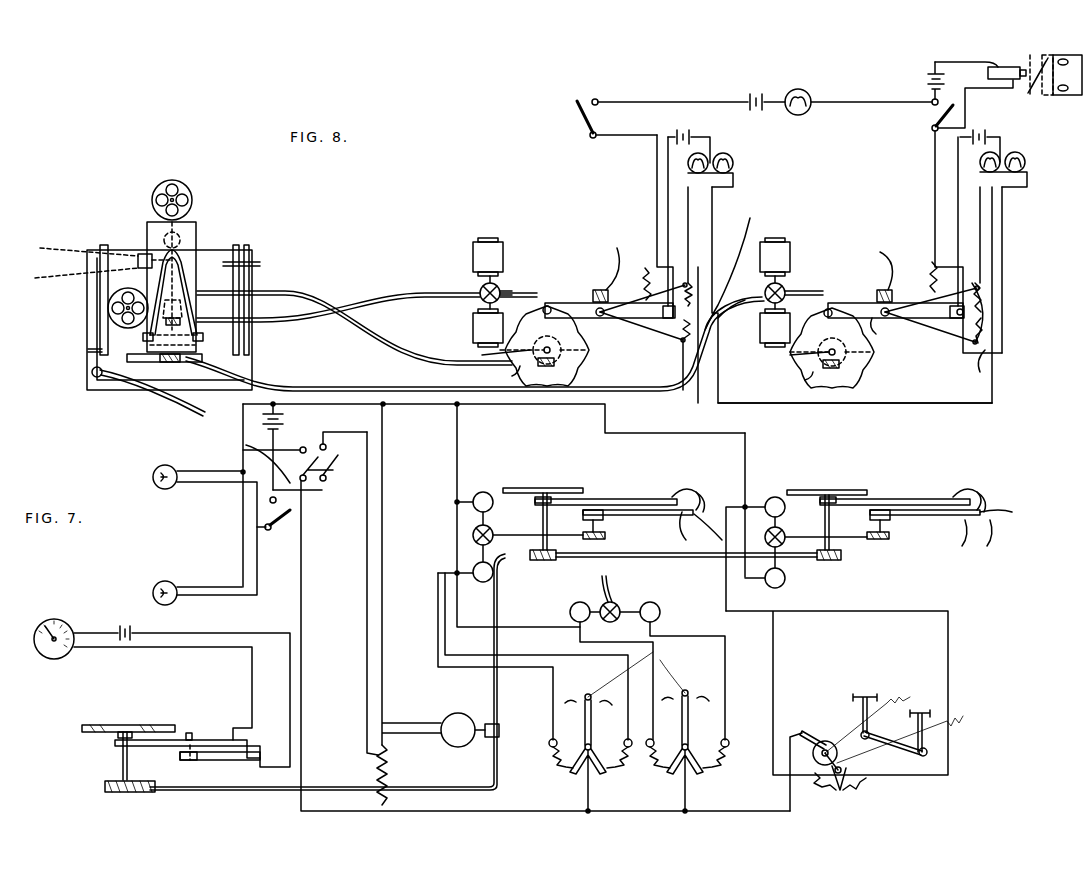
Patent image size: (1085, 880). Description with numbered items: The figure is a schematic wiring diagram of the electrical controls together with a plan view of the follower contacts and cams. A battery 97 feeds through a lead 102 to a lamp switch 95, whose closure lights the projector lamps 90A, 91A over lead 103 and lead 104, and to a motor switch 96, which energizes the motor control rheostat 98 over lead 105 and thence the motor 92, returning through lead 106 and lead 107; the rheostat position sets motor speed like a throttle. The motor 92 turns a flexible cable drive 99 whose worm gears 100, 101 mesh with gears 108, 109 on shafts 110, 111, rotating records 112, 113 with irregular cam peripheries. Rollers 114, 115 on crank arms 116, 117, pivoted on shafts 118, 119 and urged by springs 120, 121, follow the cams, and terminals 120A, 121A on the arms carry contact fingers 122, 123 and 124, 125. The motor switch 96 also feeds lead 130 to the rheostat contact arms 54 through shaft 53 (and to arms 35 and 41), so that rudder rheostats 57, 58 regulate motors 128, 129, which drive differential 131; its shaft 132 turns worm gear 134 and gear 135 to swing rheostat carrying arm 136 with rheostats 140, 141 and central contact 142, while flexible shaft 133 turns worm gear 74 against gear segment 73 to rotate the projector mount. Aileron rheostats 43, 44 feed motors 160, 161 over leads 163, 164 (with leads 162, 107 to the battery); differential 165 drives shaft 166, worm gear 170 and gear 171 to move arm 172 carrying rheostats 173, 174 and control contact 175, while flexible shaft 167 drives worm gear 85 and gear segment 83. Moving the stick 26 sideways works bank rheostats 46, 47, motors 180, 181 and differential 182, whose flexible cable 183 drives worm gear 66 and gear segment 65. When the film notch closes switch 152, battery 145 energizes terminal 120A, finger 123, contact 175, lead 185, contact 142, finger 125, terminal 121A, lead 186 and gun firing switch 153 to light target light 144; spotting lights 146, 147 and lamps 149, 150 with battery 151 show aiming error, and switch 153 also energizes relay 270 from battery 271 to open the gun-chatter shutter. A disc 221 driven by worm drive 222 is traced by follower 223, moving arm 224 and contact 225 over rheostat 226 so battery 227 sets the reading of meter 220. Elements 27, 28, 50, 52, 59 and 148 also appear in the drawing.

In FIG. 7, the stick 26 is at (636, 672).
In FIG. 7, the T-handle 27 is at (924, 710).
In FIG. 7, the T-handle 28 is at (864, 695).
In FIG. 7, the rheostat contact arms 35 is at (583, 762).
In FIG. 7, the rheostat contact arms 41 is at (687, 762).
In FIG. 7, the aileron control rheostat 43 is at (550, 751).
In FIG. 7, the aileron control rheostat 44 is at (609, 769).
In FIG. 7, the bank control rheostat 46 is at (658, 770).
In FIG. 7, the bank control rheostat 47 is at (720, 768).
In FIG. 7, the rod 50 is at (900, 741).
In FIG. 7, the disc 52 is at (831, 742).
In FIG. 7, the shaft 53 is at (808, 735).
In FIG. 7, the rheostat contact arms 54 is at (848, 770).
In FIG. 7, the rudder control rheostat 57 is at (826, 791).
In FIG. 7, the rudder control rheostat 58 is at (849, 791).
In FIG. 7, the link 59 is at (958, 714).
In FIG. 8, the gear segment 65 is at (88, 352).
In FIG. 8, the worm gear 66 is at (92, 373).
In FIG. 8, the gear segment 73 is at (153, 362).
In FIG. 8, the worm gear 74 is at (175, 362).
In FIG. 8, the gear segment 83 is at (182, 285).
In FIG. 8, the worm gear 85 is at (183, 310).
In FIG. 7, the projector lamp 90A is at (153, 476).
In FIG. 7, the projector lamp 91A is at (153, 592).
In FIG. 7, the motor 92 is at (454, 748).
In FIG. 7, the lamp switch 95 is at (292, 515).
In FIG. 7, the motor switch 96 is at (330, 457).
In FIG. 7, the battery 97 is at (282, 420).
In FIG. 7, the motor control rheostat 98 is at (377, 770).
In FIG. 8, the flexible cable drive 99 is at (290, 291).
In FIG. 7, the flexible cable drive 99 is at (494, 688).
In FIG. 8, the worm gear 100 is at (565, 372).
In FIG. 7, the worm gear 100 is at (545, 563).
In FIG. 8, the worm gear 101 is at (855, 372).
In FIG. 7, the worm gear 101 is at (822, 562).
In FIG. 7, the lead 102 is at (250, 446).
In FIG. 7, the lead 103 is at (248, 535).
In FIG. 7, the lead 104 is at (242, 505).
In FIG. 7, the lead 105 is at (367, 532).
In FIG. 7, the lead 106 is at (383, 560).
In FIG. 7, the lead 107 is at (457, 410).
In FIG. 8, the gear 108 is at (560, 359).
In FIG. 7, the gear 108 is at (558, 561).
In FIG. 8, the gear 109 is at (845, 360).
In FIG. 7, the gear 109 is at (842, 560).
In FIG. 8, the shaft 110 is at (491, 355).
In FIG. 7, the shaft 110 is at (543, 514).
In FIG. 8, the shaft 111 is at (795, 355).
In FIG. 7, the shaft 111 is at (825, 522).
In FIG. 8, the record 112 is at (512, 376).
In FIG. 7, the record 112 is at (527, 490).
In FIG. 8, the record 113 is at (805, 380).
In FIG. 7, the record 113 is at (817, 490).
In FIG. 8, the roller 114 is at (547, 306).
In FIG. 7, the roller 114 is at (545, 496).
In FIG. 8, the roller 115 is at (828, 307).
In FIG. 7, the roller 115 is at (828, 497).
In FIG. 8, the crank arm 116 is at (597, 290).
In FIG. 7, the crank arm 116 is at (636, 497).
In FIG. 8, the crank arm 117 is at (879, 290).
In FIG. 7, the crank arm 117 is at (906, 497).
In FIG. 8, the shaft 118 is at (604, 308).
In FIG. 7, the shaft 118 is at (594, 497).
In FIG. 8, the shaft 119 is at (889, 308).
In FIG. 7, the shaft 119 is at (874, 497).
In FIG. 8, the spring 120 is at (645, 268).
In FIG. 8, the terminal 120A is at (642, 334).
In FIG. 8, the spring 121 is at (932, 262).
In FIG. 8, the terminal 121A is at (931, 334).
In FIG. 7, the contact finger 122 is at (668, 496).
In FIG. 7, the contact finger 123 is at (713, 495).
In FIG. 7, the contact finger 124 is at (962, 496).
In FIG. 7, the contact finger 125 is at (988, 500).
In FIG. 8, the motor 128 is at (778, 238).
In FIG. 7, the motor 128 is at (779, 498).
In FIG. 8, the motor 129 is at (762, 343).
In FIG. 7, the motor 129 is at (775, 588).
In FIG. 7, the lead 130 is at (301, 604).
In FIG. 8, the differential 131 is at (768, 285).
In FIG. 7, the differential 131 is at (770, 532).
In FIG. 8, the shaft 132 is at (812, 295).
In FIG. 7, the shaft 132 is at (891, 540).
In FIG. 8, the flexible shaft drive 133 is at (750, 298).
In FIG. 8, the worm gear 134 is at (871, 263).
In FIG. 8, the gear 135 is at (870, 330).
In FIG. 7, the gear 135 is at (890, 534).
In FIG. 8, the rheostat carrying arm 136 is at (980, 372).
In FIG. 7, the rheostat carrying arm 136 is at (967, 540).
In FIG. 8, the rheostat 140 is at (990, 294).
In FIG. 8, the rheostat 141 is at (993, 338).
In FIG. 8, the central contact 142 is at (968, 313).
In FIG. 7, the central contact 142 is at (1012, 512).
In FIG. 8, the target light 144 is at (802, 90).
In FIG. 8, the battery 145 is at (758, 98).
In FIG. 8, the spotting light 146 is at (704, 155).
In FIG. 8, the spotting light 147 is at (733, 164).
In FIG. 8, the battery 148 is at (682, 130).
In FIG. 8, the lamp 149 is at (996, 155).
In FIG. 8, the lamp 150 is at (1025, 163).
In FIG. 8, the battery 151 is at (985, 132).
In FIG. 8, the switch 152 is at (574, 115).
In FIG. 8, the gun firing switch 153 is at (932, 128).
In FIG. 8, the motor 160 is at (498, 222).
In FIG. 7, the motor 160 is at (487, 495).
In FIG. 8, the motor 161 is at (473, 329).
In FIG. 7, the motor 161 is at (488, 582).
In FIG. 7, the lead 162 is at (457, 450).
In FIG. 7, the lead 163 is at (548, 655).
In FIG. 7, the lead 164 is at (440, 604).
In FIG. 8, the differential 165 is at (482, 289).
In FIG. 7, the differential 165 is at (476, 531).
In FIG. 8, the shaft 166 is at (518, 278).
In FIG. 7, the shaft 166 is at (478, 543).
In FIG. 8, the flexible shaft 167 is at (405, 294).
In FIG. 8, the worm gear 170 is at (602, 260).
In FIG. 8, the gear 171 is at (676, 312).
In FIG. 8, the rheostat carrying arm 172 is at (672, 360).
In FIG. 7, the rheostat carrying arm 172 is at (662, 515).
In FIG. 8, the rheostat 173 is at (694, 285).
In FIG. 8, the rheostat 174 is at (660, 391).
In FIG. 8, the control contact 175 is at (727, 274).
In FIG. 7, the control contact 175 is at (701, 531).
In FIG. 7, the motor 180 is at (574, 606).
In FIG. 7, the motor 181 is at (652, 602).
In FIG. 7, the differential 182 is at (613, 602).
In FIG. 8, the flexible cable 183 is at (178, 410).
In FIG. 7, the flexible cable 183 is at (601, 582).
In FIG. 8, the lead 185 is at (912, 403).
In FIG. 8, the lead 186 is at (935, 186).
In FIG. 7, the meter 220 is at (38, 621).
In FIG. 7, the disc 221 is at (80, 726).
In FIG. 7, the worm drive 222 is at (104, 790).
In FIG. 7, the follower 223 is at (125, 724).
In FIG. 7, the arm 224 is at (200, 740).
In FIG. 7, the contact 225 is at (254, 753).
In FIG. 7, the rheostat 226 is at (230, 760).
In FIG. 7, the battery 227 is at (130, 623).
In FIG. 8, the relay 270 is at (968, 62).
In FIG. 8, the battery 271 is at (927, 80).